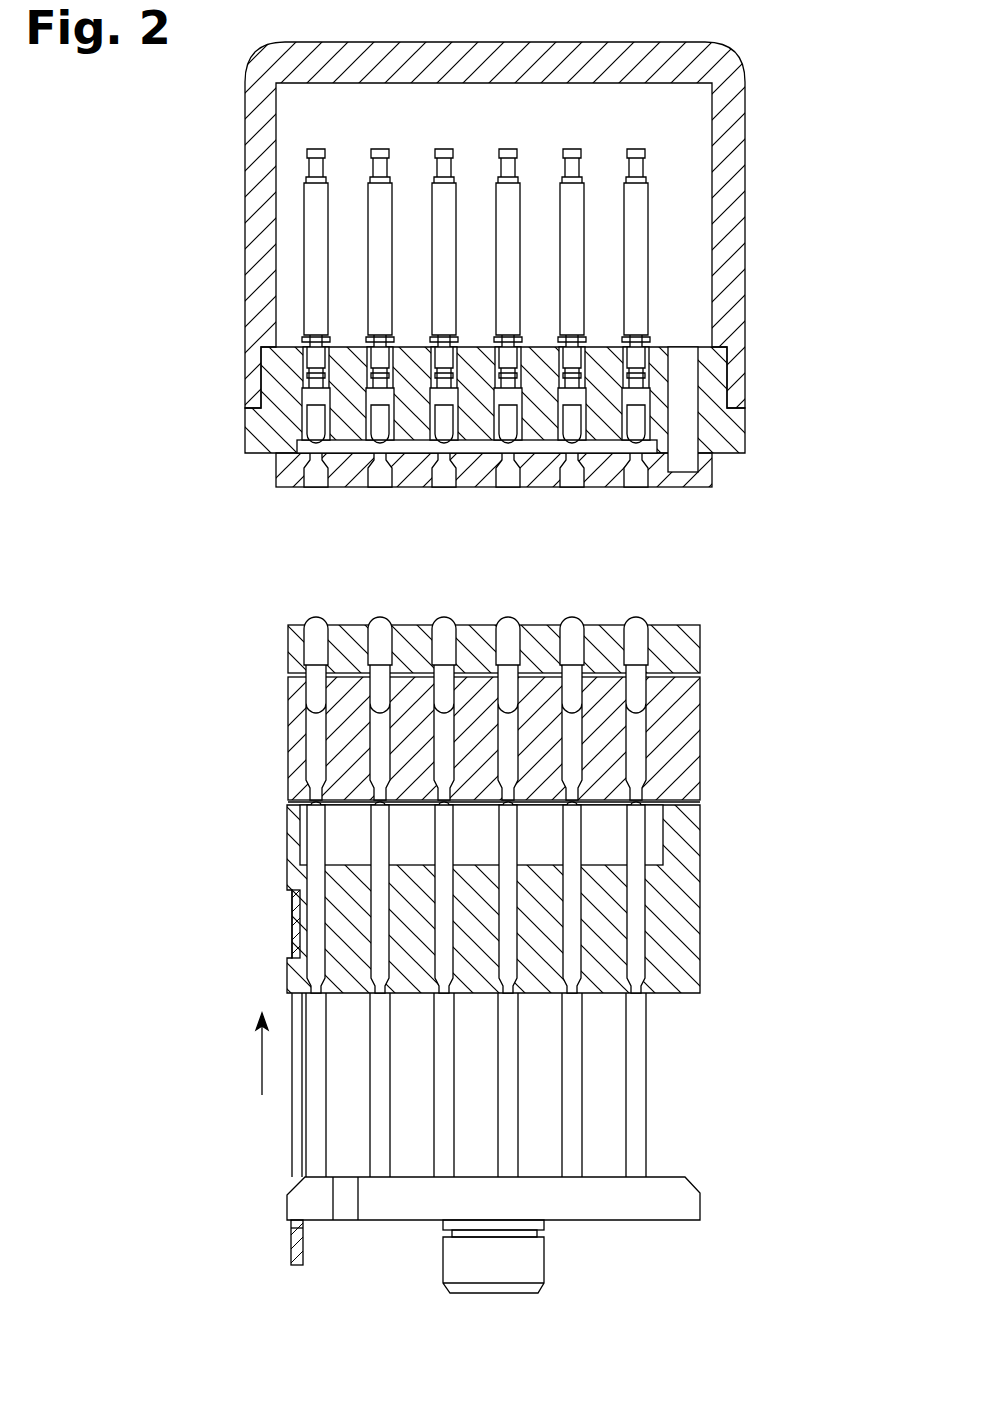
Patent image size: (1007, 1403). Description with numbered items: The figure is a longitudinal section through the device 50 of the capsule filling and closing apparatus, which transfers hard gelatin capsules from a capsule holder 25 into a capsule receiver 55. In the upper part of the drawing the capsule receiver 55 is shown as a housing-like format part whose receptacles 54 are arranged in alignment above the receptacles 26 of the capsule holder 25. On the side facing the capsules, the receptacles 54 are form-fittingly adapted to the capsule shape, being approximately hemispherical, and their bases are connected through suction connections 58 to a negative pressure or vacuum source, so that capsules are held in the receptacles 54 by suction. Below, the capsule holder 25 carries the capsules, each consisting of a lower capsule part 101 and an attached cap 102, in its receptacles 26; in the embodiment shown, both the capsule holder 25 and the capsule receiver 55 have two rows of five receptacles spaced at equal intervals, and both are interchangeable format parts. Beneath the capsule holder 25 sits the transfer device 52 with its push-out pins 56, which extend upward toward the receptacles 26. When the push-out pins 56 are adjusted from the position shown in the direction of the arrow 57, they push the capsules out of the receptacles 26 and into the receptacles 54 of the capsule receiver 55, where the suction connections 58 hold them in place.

The device 50 is at (771, 216).
The capsule receiver 55 is at (745, 320).
The suction connections 58 is at (378, 428).
The receptacles 54 is at (316, 474).
The transfer device 52 is at (773, 851).
The capsule holder 25 is at (693, 731).
The cap 102 is at (313, 643).
The lower capsule part 101 is at (313, 690).
The receptacles 26 is at (392, 734).
The push-out pins 56 is at (313, 920).
The arrow 57 is at (245, 1062).